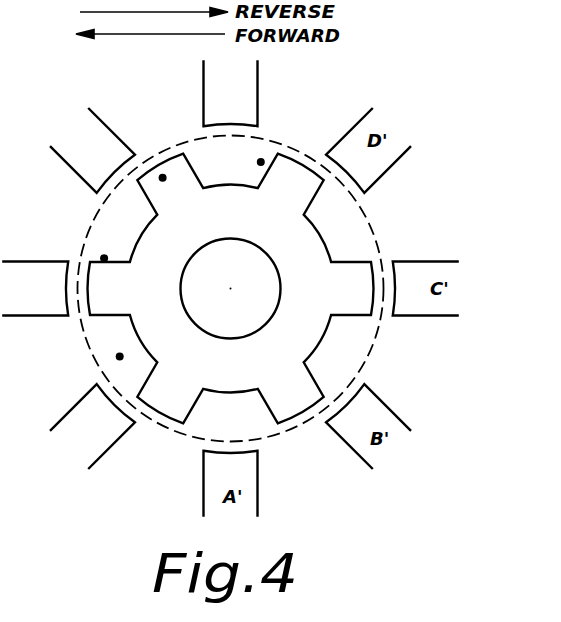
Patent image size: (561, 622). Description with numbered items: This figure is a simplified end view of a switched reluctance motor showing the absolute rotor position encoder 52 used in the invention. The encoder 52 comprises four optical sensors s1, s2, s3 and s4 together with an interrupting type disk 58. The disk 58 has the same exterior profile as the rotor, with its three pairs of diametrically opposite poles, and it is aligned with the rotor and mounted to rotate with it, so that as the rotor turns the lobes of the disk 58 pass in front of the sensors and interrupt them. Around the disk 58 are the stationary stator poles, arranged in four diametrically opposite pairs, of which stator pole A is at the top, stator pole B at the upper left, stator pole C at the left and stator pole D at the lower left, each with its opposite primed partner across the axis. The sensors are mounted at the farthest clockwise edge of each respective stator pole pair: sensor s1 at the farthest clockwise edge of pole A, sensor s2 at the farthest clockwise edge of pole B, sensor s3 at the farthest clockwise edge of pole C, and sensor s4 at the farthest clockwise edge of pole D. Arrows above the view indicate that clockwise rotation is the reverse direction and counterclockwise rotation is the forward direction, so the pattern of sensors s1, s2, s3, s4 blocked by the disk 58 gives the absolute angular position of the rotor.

The encoder 52 is at (366, 221).
The interrupting type disk 58 is at (323, 338).
The stator pole A is at (231, 93).
The stator pole B is at (92, 150).
The stator pole C is at (35, 289).
The stator pole D is at (92, 426).
The optical sensor s1 is at (249, 152).
The optical sensor s2 is at (173, 175).
The optical sensor s3 is at (108, 247).
The optical sensor s4 is at (113, 347).